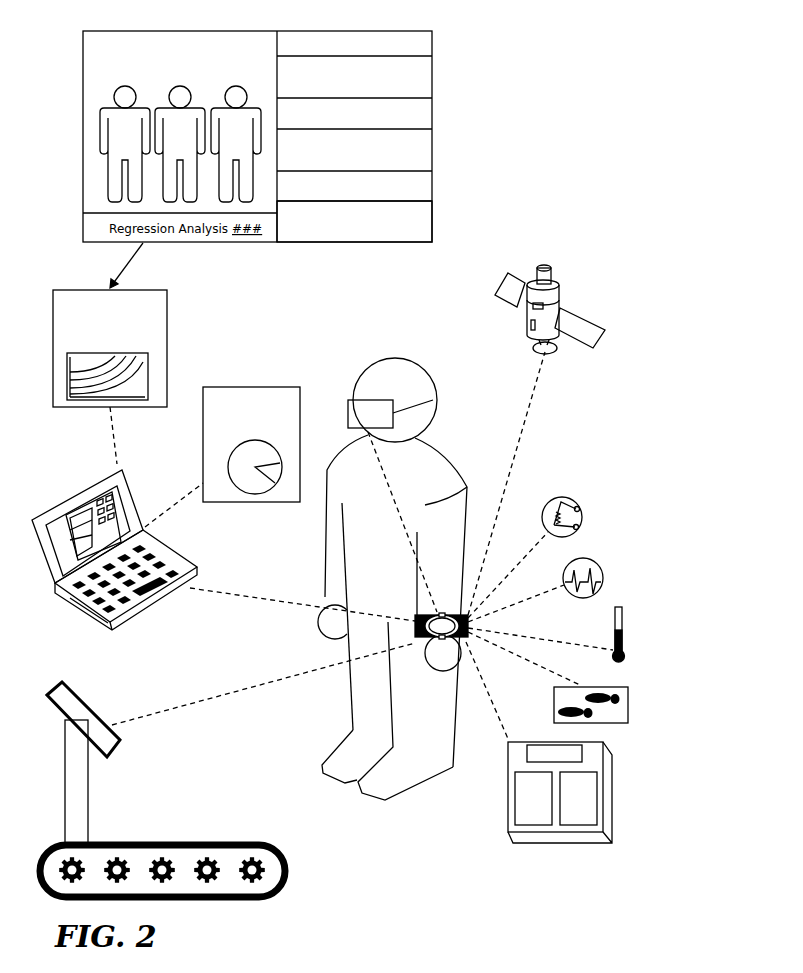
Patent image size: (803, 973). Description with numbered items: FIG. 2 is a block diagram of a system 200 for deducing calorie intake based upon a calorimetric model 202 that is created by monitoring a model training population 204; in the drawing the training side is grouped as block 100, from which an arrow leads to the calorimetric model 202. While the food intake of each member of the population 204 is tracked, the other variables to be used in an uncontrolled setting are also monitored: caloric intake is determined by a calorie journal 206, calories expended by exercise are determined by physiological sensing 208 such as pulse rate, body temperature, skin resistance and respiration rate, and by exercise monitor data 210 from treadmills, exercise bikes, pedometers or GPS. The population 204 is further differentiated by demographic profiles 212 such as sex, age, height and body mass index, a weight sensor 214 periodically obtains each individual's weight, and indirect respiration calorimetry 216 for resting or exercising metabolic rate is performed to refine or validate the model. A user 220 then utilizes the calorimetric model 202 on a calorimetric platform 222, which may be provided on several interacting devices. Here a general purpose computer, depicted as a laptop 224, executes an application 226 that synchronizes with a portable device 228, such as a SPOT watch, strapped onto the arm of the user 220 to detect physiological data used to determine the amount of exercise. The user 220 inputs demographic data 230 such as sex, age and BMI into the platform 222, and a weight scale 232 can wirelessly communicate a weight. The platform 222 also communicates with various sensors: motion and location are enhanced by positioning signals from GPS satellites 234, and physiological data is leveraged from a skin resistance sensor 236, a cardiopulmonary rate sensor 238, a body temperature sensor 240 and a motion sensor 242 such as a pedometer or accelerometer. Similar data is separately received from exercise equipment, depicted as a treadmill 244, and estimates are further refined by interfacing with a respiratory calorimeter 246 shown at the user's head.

The model training system 100 is at (62, 64).
The calorimetric model 202 is at (110, 348).
The model training population 204 is at (180, 125).
The calorie journal 206 is at (354, 47).
The physiological sensing 208 is at (354, 80).
The exercise monitor data 210 is at (354, 118).
The demographic profiles 212 is at (354, 153).
The weight sensor 214 is at (354, 191).
The indirect respiration calorimetry 216 is at (354, 221).
The user 220 is at (437, 446).
The calorimetric platform 222 is at (298, 643).
The laptop 224 is at (190, 557).
The application 226 is at (102, 493).
The portable device 228 is at (415, 620).
The demographic data 230 is at (251, 444).
The weight scale 232 is at (508, 822).
The GPS satellites 234 is at (560, 283).
The skin resistance sensor 236 is at (575, 498).
The cardiopulmonary rate sensor 238 is at (590, 558).
The body temperature sensor 240 is at (620, 603).
The motion sensor 242 is at (610, 725).
The treadmill 244 is at (73, 688).
The respiratory calorimeter 246 is at (348, 413).
The system 200 is at (639, 394).